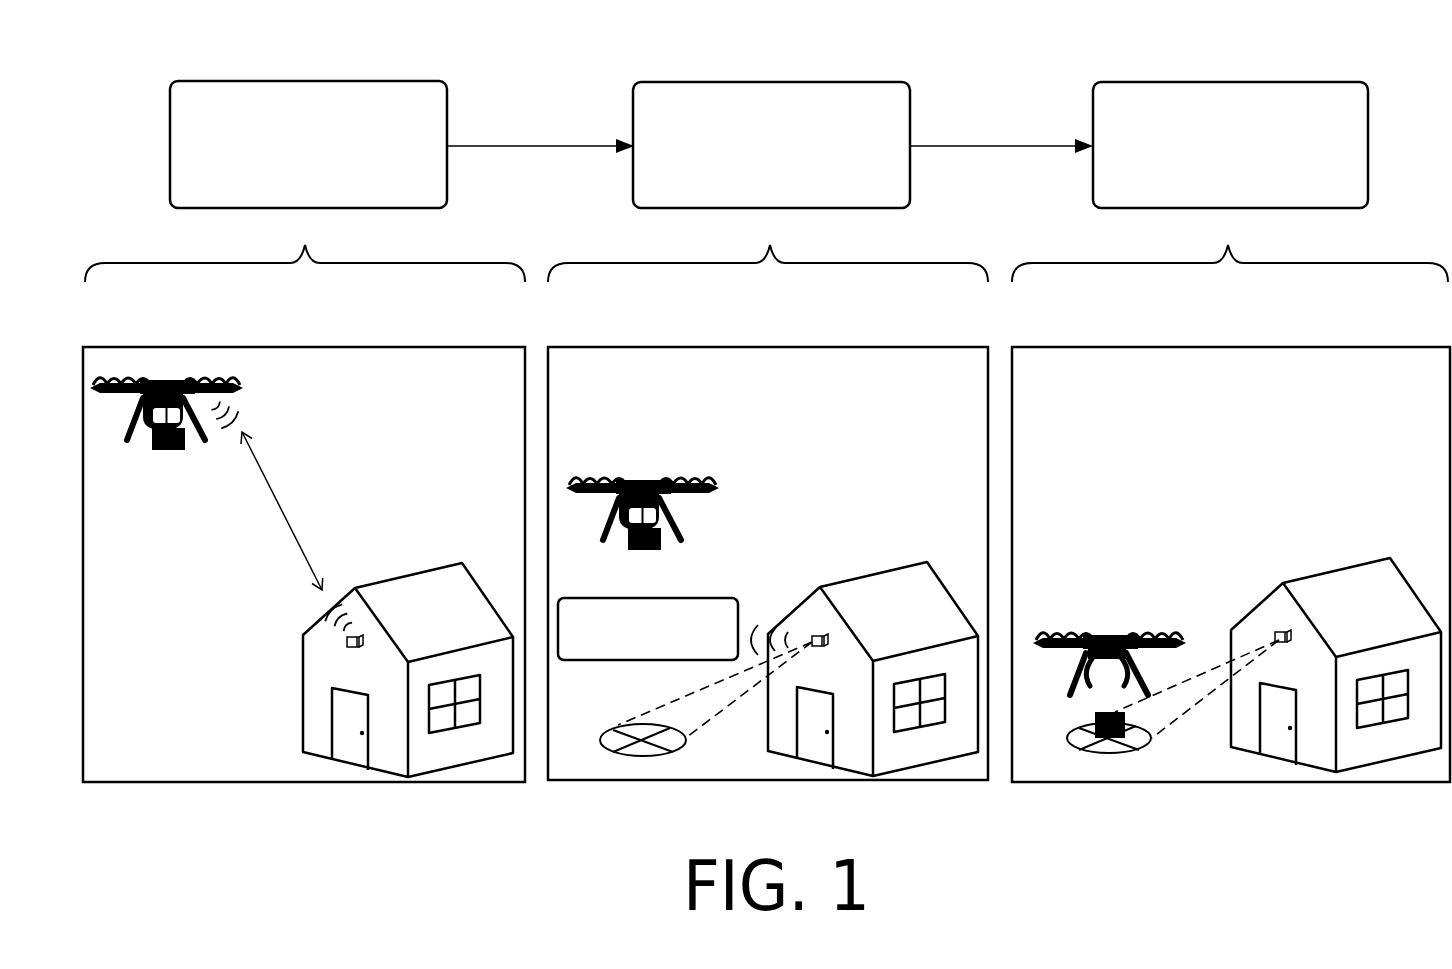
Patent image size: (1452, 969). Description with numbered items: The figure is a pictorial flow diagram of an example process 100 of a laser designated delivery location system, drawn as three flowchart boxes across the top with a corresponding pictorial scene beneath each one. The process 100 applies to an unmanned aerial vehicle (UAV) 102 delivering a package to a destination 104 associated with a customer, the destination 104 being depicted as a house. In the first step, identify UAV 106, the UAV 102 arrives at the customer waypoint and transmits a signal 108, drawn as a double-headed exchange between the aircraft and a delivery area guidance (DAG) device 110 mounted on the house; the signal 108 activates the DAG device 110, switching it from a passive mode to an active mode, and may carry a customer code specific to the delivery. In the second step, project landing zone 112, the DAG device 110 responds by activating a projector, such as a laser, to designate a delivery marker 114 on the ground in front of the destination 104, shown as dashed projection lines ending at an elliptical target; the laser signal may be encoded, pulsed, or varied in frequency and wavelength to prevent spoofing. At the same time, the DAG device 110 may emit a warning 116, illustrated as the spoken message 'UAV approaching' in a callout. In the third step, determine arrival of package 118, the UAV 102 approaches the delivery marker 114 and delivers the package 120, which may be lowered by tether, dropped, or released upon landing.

The process 100 is at (197, 54).
The unmanned aerial vehicle (UAV) 102 is at (213, 385).
The destination 104 is at (383, 580).
The identify UAV step 106 is at (328, 172).
The signal 108 is at (266, 494).
The delivery area guidance (DAG) device 110 is at (355, 647).
The project landing zone step 112 is at (792, 171).
The delivery marker 114 is at (642, 757).
The warning 116 is at (588, 660).
The determine arrival of package step 118 is at (1252, 186).
The package 120 is at (1112, 742).